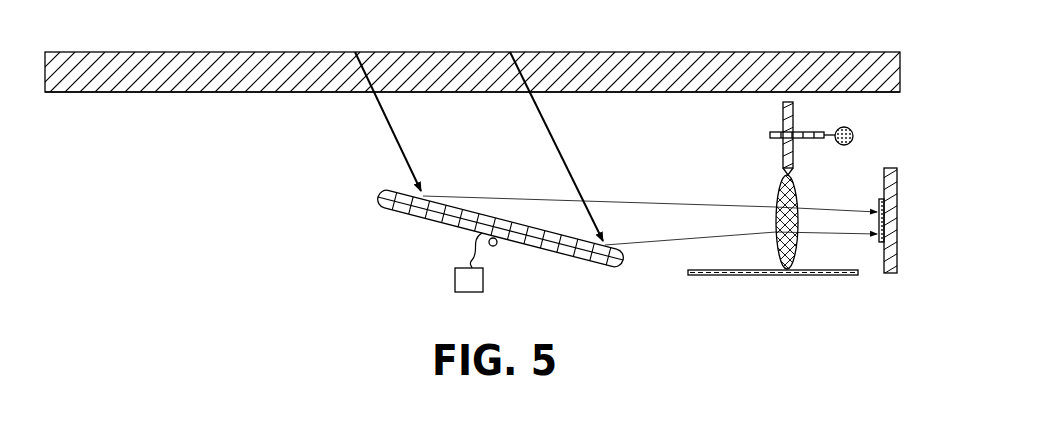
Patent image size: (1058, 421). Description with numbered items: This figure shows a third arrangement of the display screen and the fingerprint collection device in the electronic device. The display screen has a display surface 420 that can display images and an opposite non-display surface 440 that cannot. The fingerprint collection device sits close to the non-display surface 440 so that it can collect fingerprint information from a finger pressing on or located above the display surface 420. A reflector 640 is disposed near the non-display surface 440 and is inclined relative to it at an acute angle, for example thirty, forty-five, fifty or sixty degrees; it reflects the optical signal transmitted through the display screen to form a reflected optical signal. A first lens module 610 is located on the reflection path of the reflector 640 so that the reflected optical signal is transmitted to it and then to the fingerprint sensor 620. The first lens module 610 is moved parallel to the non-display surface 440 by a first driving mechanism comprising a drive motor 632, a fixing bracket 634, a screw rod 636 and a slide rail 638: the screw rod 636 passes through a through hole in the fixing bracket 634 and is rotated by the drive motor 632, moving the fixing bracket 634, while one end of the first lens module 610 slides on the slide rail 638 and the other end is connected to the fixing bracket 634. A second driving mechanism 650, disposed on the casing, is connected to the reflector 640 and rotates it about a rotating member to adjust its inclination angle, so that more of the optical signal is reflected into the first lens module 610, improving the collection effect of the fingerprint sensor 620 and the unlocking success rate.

The display surface 420 is at (245, 51).
The non-display surface 440 is at (246, 92).
The first lens module 610 is at (777, 194).
The fingerprint sensor 620 is at (898, 195).
The drive motor 632 is at (854, 136).
The fixing bracket 634 is at (785, 153).
The screw rod 636 is at (802, 131).
The slide rail 638 is at (818, 275).
The reflector 640 is at (372, 190).
The second driving mechanism 650 is at (457, 283).